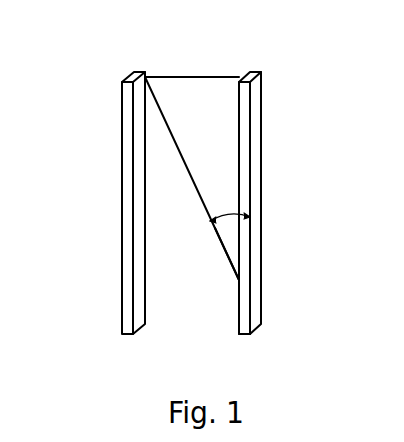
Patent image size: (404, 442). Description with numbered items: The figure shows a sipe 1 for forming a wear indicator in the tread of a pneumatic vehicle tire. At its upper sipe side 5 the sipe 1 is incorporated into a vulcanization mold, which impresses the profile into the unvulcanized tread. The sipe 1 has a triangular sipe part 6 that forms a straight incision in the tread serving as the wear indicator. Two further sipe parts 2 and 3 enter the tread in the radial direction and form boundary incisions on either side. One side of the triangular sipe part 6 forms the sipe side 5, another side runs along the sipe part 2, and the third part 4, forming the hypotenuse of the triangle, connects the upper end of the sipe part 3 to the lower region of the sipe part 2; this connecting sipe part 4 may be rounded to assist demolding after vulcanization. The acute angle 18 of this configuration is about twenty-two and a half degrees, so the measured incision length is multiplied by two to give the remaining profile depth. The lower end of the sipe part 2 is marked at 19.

The sipe 1 is at (204, 197).
The sipe part 2 is at (255, 158).
The sipe part 3 is at (133, 253).
The connecting sipe part 4 is at (208, 198).
The upper sipe side 5 is at (191, 77).
The triangular sipe part 6 is at (187, 143).
The acute angle 18 is at (230, 245).
The lower end of right post 19 is at (239, 327).